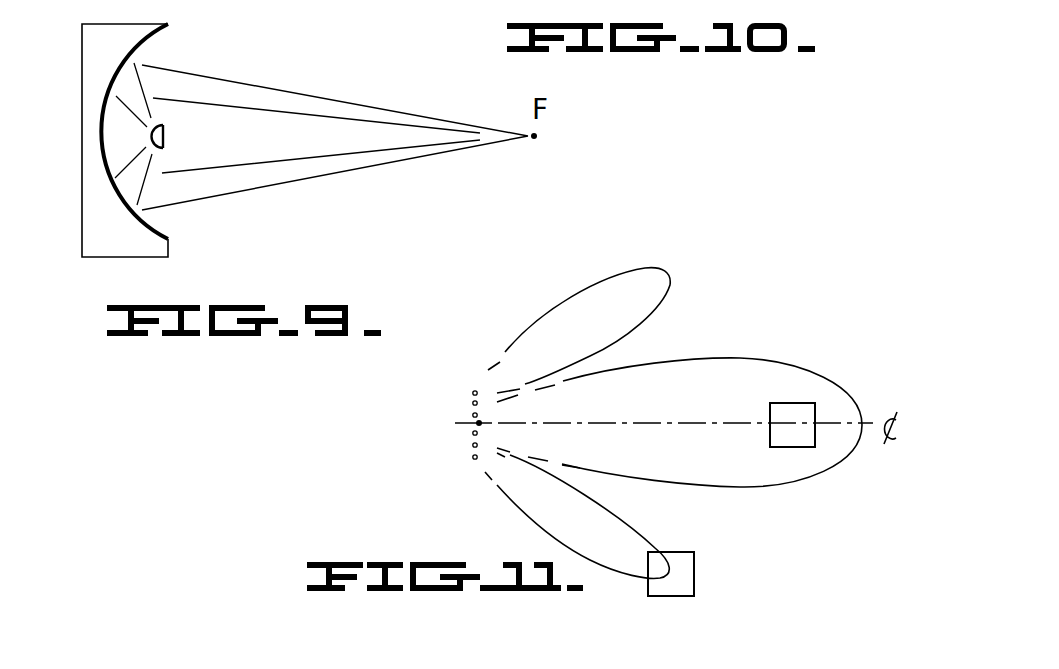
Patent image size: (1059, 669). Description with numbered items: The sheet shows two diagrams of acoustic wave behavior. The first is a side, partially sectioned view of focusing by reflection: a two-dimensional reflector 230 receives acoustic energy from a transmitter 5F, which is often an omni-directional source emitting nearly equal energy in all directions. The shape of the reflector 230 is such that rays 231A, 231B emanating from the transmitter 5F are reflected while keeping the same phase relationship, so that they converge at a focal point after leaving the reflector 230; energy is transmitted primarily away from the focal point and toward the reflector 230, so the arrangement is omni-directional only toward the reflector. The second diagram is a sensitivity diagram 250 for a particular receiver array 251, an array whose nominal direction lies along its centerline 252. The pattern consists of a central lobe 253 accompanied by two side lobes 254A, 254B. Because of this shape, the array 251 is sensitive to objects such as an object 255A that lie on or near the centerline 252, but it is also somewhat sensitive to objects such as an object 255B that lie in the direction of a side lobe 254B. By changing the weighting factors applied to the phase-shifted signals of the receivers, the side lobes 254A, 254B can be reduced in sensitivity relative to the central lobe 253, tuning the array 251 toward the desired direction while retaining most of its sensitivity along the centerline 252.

In FIG. 9, the reflector 230 is at (170, 245).
In FIG. 9, the transmitter 5F is at (149, 137).
In FIG. 9, the rays 231A is at (202, 74).
In FIG. 9, the rays 231B is at (278, 110).
In FIG. 11, the sensitivity diagram 250 is at (538, 317).
In FIG. 11, the receiver array 251 is at (474, 433).
In FIG. 11, the centerline 252 is at (655, 423).
In FIG. 11, the central lobe 253 is at (718, 358).
In FIG. 11, the side lobe 254A is at (672, 283).
In FIG. 11, the side lobe 254B is at (547, 527).
In FIG. 11, the object 255A is at (793, 403).
In FIG. 11, the object 255B is at (695, 553).